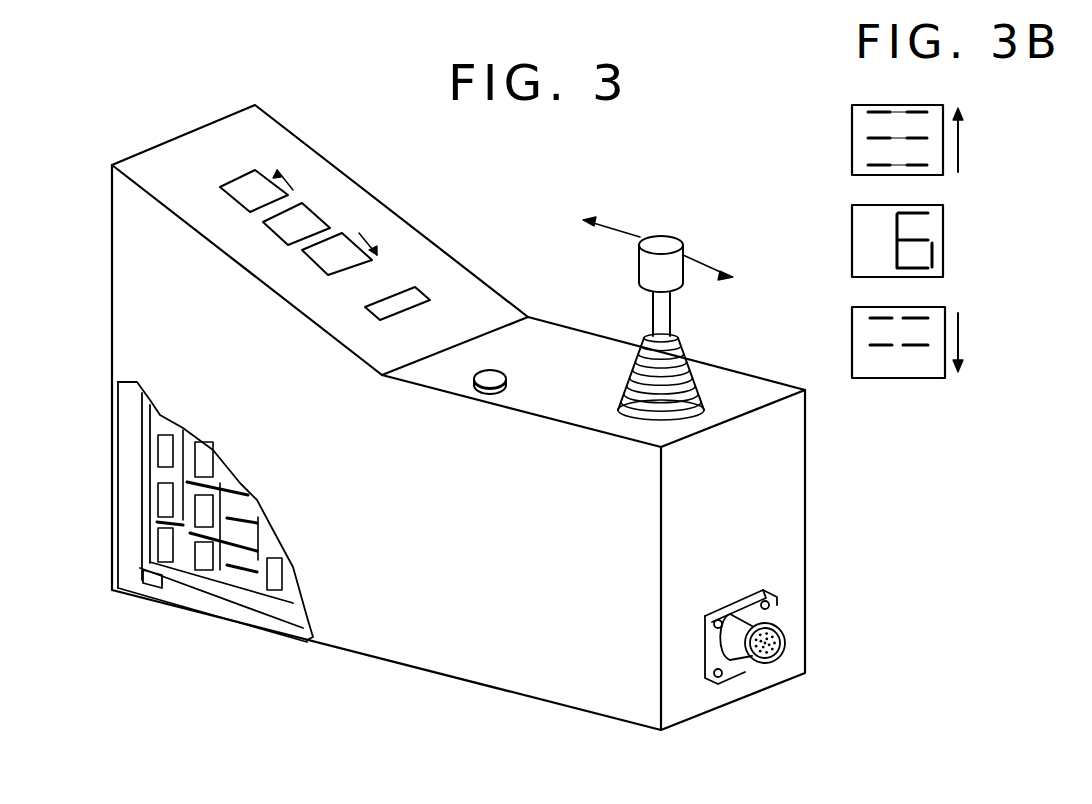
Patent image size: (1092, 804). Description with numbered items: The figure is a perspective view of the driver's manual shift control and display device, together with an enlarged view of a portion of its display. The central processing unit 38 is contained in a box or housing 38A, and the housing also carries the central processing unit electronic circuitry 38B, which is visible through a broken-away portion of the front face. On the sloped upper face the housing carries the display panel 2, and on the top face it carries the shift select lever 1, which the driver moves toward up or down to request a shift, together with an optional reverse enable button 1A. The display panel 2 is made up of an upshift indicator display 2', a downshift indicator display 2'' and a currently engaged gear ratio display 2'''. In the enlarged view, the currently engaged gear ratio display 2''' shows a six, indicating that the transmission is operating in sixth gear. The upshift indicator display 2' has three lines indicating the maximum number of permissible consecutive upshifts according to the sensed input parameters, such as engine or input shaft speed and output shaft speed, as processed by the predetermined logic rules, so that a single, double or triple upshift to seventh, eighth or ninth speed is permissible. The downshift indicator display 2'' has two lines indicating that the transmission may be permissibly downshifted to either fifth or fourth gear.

In FIG. 3, the shift select lever 1 is at (672, 237).
In FIG. 3, the reverse enable button 1A is at (508, 390).
In FIG. 3, the display panel 2 is at (325, 232).
In FIG. 3, the central processing unit 38 is at (137, 447).
In FIG. 3, the housing 38A is at (423, 620).
In FIG. 3, the central processing unit electronic circuitry 38B is at (167, 497).
In FIG. 3B, the upshift indicator display 2' is at (908, 127).
In FIG. 3B, the downshift indicator display 2'' is at (929, 334).
In FIG. 3B, the currently engaged gear ratio display 2''' is at (920, 234).